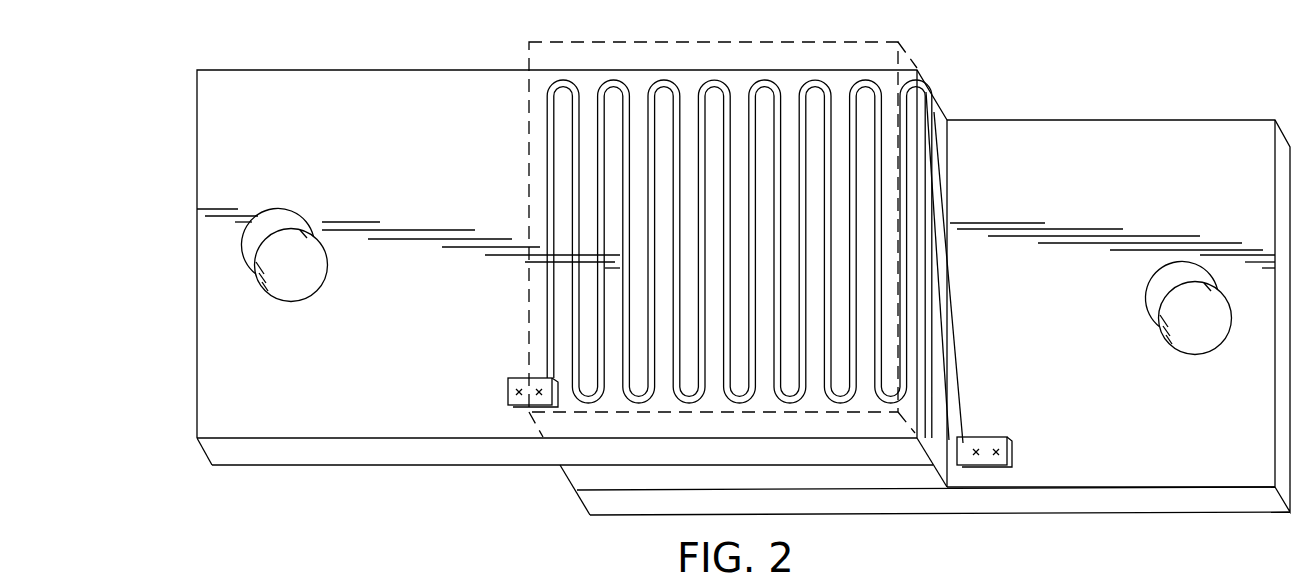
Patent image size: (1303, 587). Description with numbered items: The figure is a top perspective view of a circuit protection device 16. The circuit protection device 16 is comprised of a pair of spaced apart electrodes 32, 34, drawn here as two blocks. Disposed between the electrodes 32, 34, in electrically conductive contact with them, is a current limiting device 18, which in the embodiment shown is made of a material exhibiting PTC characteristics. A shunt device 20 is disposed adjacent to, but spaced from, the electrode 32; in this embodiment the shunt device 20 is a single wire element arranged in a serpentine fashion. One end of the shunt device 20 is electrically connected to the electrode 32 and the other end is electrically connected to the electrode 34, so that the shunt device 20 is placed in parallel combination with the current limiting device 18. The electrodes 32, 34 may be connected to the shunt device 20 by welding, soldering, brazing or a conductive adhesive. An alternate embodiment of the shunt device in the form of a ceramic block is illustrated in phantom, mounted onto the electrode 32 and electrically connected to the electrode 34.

The circuit protection device 16 is at (404, 517).
The current limiting device 18 is at (583, 474).
The shunt device 20 is at (548, 163).
The electrode 32 is at (292, 425).
The electrode 34 is at (1180, 473).